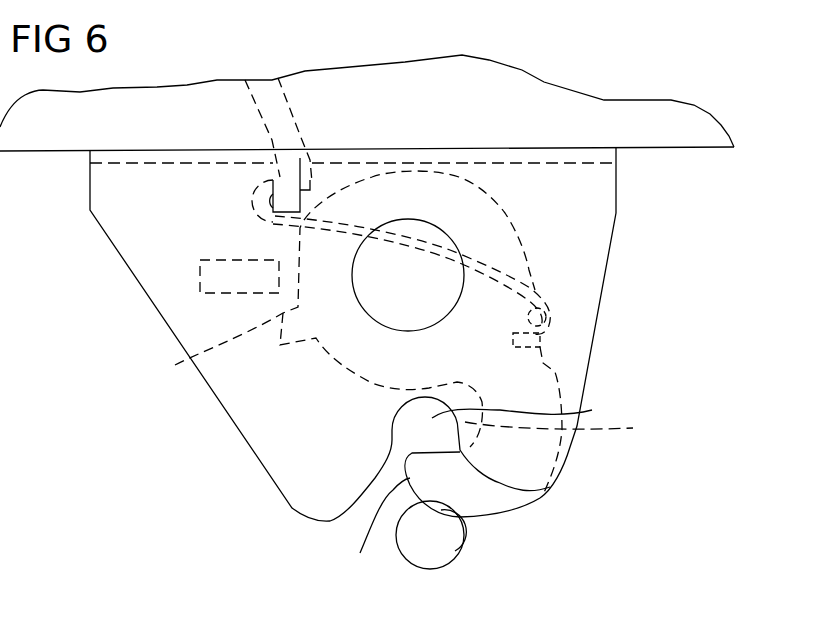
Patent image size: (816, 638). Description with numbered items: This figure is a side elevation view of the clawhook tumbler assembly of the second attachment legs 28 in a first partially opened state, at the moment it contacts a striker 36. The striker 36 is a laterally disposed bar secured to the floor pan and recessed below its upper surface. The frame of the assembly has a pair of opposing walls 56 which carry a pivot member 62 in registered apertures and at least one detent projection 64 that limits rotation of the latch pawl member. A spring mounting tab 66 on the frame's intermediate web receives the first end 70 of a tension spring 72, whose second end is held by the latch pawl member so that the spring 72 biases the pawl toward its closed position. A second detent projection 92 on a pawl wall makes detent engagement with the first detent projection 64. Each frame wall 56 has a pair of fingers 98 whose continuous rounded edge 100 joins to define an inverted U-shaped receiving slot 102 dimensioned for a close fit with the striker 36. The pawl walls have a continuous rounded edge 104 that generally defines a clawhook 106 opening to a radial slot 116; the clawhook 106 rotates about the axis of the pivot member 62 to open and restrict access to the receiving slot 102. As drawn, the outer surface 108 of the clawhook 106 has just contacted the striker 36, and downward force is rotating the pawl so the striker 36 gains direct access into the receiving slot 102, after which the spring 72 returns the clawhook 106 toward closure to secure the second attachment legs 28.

The second attachment legs 28 is at (690, 278).
The strikers 36 is at (417, 550).
The opposing walls 56 is at (584, 293).
The pivot member 62 is at (436, 244).
The detent projection 64 is at (200, 270).
The spring mounting tab 66 is at (243, 79).
The first end 70 is at (279, 78).
The tension spring 72 is at (551, 291).
The second detent projection 92 is at (351, 334).
The fingers 98 is at (310, 468).
The continuous rounded edge 100 is at (333, 521).
The receiving slot 102 is at (538, 413).
The continuous rounded edge 104 is at (360, 526).
The clawhook 106 is at (497, 503).
The outer surface 108 is at (463, 548).
The radial slot 116 is at (580, 428).